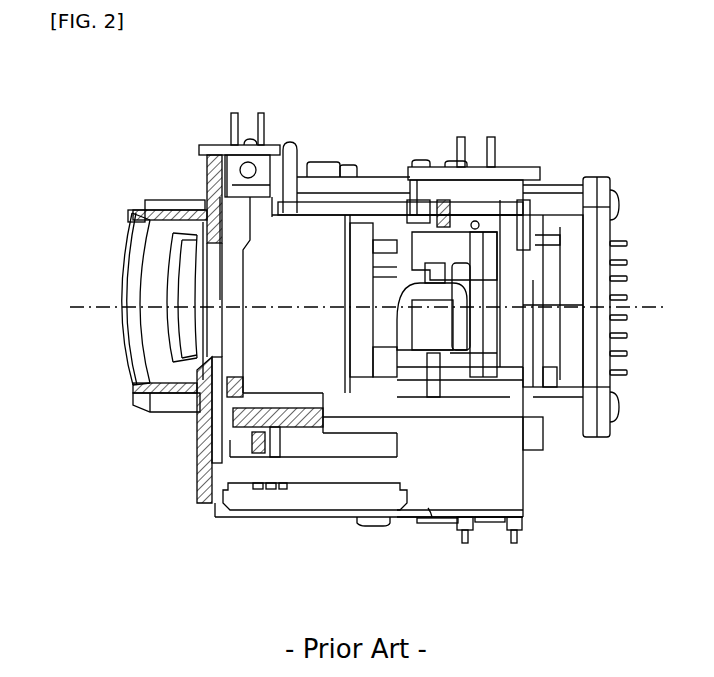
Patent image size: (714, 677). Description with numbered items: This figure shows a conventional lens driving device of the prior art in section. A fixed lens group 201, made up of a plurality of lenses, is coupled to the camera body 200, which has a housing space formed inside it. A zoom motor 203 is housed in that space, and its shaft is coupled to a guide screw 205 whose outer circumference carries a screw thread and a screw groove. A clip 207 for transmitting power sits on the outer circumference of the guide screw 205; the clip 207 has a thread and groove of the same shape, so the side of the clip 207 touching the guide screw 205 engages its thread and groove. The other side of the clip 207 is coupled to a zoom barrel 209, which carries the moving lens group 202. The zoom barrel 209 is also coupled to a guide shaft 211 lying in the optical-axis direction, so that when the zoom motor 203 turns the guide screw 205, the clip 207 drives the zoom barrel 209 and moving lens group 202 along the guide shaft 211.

The camera body 200 is at (432, 136).
The fixed lens group 201 is at (157, 271).
The moving lens group 202 is at (178, 240).
The zoom motor 203 is at (433, 527).
The guide screw 205 is at (309, 473).
The clip 207 is at (222, 443).
The zoom barrel 209 is at (197, 411).
The guide shaft 211 is at (368, 208).